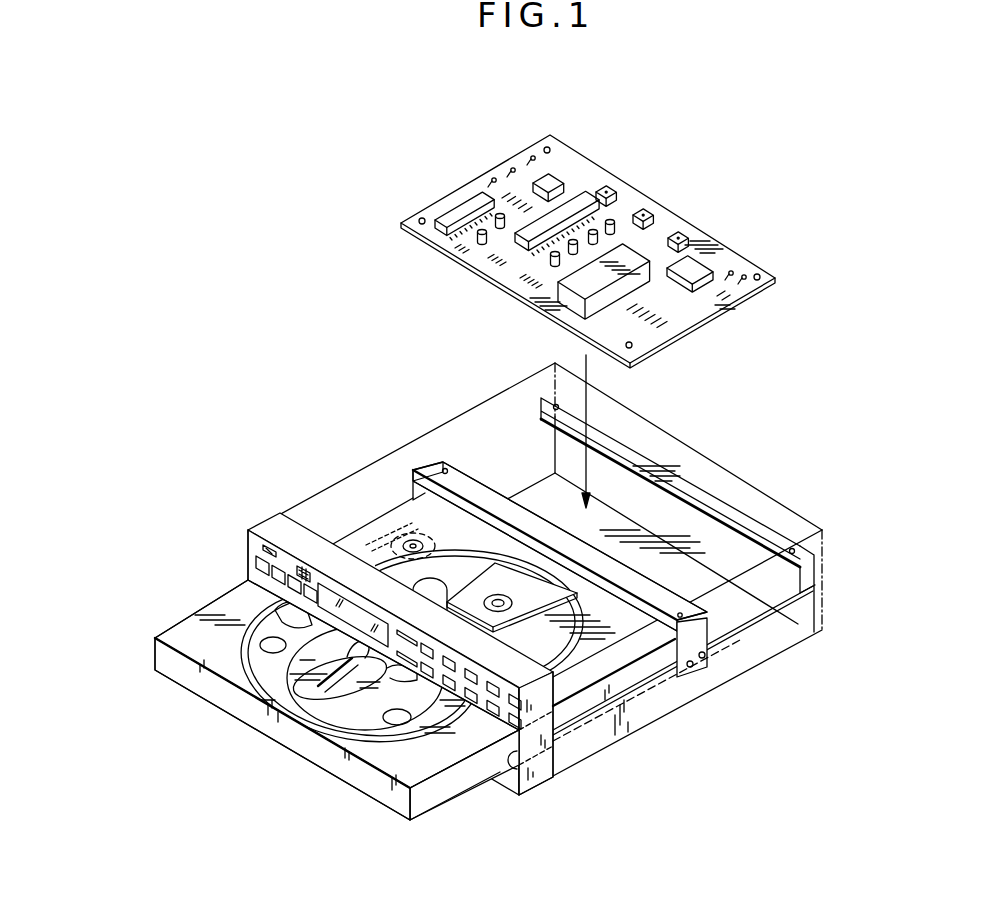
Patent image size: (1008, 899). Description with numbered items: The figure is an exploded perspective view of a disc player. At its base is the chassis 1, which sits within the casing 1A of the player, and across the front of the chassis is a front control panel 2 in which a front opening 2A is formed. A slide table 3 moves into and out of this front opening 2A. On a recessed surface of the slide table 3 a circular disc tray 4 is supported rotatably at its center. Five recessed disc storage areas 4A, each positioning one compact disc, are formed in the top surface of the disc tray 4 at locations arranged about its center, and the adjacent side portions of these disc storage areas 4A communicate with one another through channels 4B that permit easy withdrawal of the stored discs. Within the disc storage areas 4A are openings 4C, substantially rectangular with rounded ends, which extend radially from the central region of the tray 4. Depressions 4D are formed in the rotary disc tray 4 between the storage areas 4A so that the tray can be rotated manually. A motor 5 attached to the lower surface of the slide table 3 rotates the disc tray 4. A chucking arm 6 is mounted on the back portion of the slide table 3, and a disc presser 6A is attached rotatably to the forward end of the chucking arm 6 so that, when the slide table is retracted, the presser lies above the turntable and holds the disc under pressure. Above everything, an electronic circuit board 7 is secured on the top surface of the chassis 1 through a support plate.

The chassis 1 is at (745, 525).
The casing 1A is at (677, 437).
The front control panel 2 is at (283, 528).
The front opening 2A is at (521, 772).
The slide table 3 is at (614, 663).
The circular disc tray 4 is at (350, 675).
The recessed disc storage areas 4A is at (280, 612).
The channels 4B is at (320, 643).
The openings 4C is at (345, 740).
The depressions 4D is at (262, 645).
The motor 5 is at (405, 535).
The chucking arm 6 is at (529, 562).
The disc presser 6A is at (497, 596).
The electronic circuit board 7 is at (578, 175).